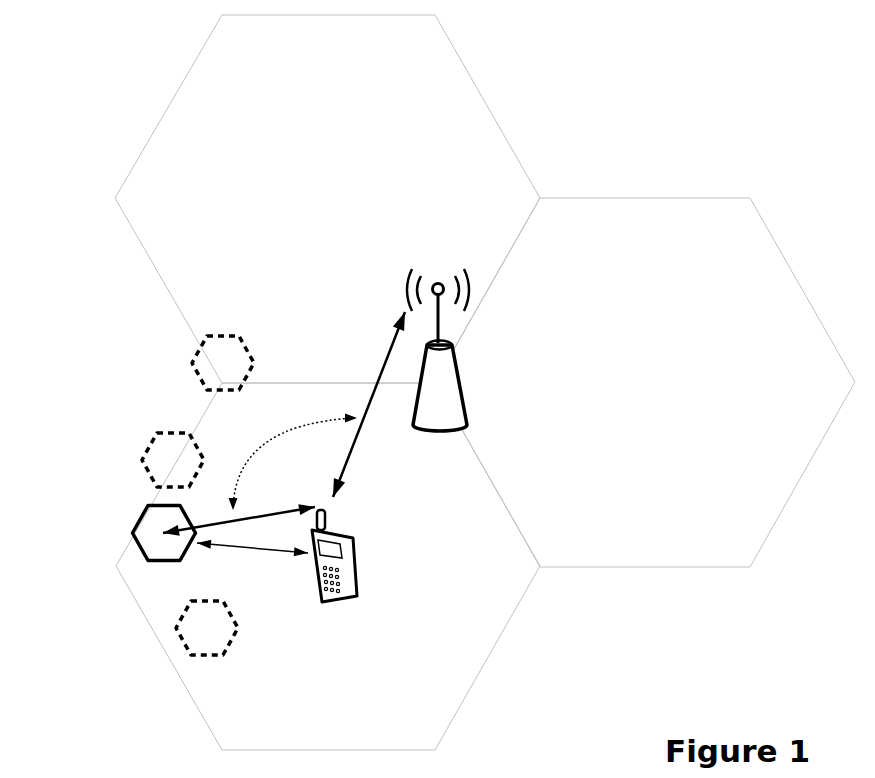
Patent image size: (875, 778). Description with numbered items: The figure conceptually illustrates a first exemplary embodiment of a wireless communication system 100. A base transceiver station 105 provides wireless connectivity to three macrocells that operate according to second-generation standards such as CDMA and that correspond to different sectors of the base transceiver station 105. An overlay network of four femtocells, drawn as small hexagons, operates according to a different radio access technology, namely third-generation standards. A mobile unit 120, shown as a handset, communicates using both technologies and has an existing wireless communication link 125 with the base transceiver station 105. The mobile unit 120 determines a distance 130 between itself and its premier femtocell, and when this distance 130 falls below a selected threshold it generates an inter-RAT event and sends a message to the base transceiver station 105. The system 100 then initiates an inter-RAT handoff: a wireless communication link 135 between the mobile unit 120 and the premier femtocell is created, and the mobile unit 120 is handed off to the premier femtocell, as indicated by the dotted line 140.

The wireless communication system 100 is at (750, 88).
The base transceiver station 105 is at (463, 397).
The mobile unit 120 is at (360, 567).
The wireless communication link 125 is at (385, 343).
The distance 130 is at (248, 548).
The wireless communication link 135 is at (267, 510).
The dotted line 140 is at (253, 457).